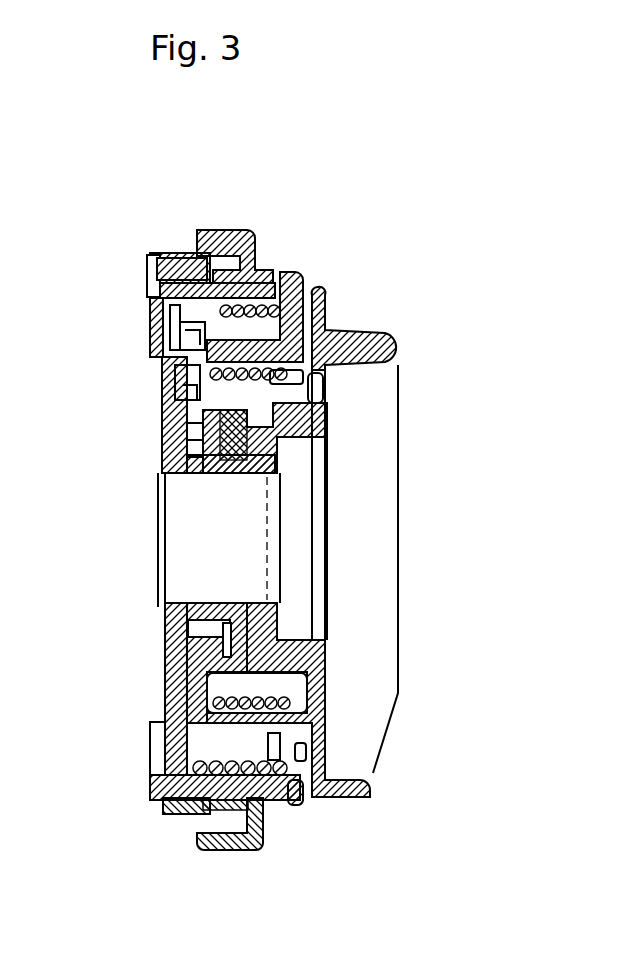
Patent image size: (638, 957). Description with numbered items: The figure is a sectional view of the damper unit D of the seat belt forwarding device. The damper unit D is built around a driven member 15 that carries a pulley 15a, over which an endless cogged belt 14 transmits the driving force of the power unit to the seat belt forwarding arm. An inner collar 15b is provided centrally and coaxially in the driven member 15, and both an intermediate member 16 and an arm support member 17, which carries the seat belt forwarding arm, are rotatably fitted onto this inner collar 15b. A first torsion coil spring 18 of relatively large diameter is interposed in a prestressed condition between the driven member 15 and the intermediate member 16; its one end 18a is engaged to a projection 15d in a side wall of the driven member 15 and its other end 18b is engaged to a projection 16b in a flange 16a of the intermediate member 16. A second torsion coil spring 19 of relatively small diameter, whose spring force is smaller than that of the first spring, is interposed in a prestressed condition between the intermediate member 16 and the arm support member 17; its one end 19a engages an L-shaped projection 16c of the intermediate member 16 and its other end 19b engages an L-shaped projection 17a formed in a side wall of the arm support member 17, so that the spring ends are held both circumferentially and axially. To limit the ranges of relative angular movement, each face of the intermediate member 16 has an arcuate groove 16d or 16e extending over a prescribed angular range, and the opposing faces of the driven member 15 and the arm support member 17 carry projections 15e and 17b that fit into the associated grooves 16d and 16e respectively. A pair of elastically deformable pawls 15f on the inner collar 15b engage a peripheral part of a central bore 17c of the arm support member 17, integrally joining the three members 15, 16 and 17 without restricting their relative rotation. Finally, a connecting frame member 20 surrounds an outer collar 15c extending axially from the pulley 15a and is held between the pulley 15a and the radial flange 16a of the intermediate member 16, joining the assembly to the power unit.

The endless cogged belt 14 is at (193, 258).
The driven member 15 is at (158, 587).
The pulley 15a is at (163, 258).
The inner collar 15b is at (225, 478).
The outer collar 15c is at (268, 300).
The projection 15d is at (215, 330).
The projection 15e is at (195, 468).
The elastically deformable pawl 15f is at (283, 607).
The intermediate member 16 is at (270, 333).
The flange 16a is at (290, 805).
The projection 16b is at (148, 773).
The projection 16c is at (200, 397).
The arcuate groove 16d is at (202, 648).
The arcuate groove 16e is at (273, 447).
The arm support member 17 is at (330, 652).
The projection 17a is at (318, 402).
The projection 17b is at (212, 660).
The central bore 17c is at (260, 618).
The first torsion coil spring 18 is at (203, 782).
The one end of first torsion coil spring 18a is at (148, 352).
The other end of first torsion coil spring 18b is at (303, 752).
The second torsion coil spring 19 is at (270, 700).
The one end of second torsion coil spring 19a is at (200, 382).
The other end of second torsion coil spring 19b is at (290, 384).
The connecting frame member 20 is at (227, 850).
The damper unit D is at (398, 242).